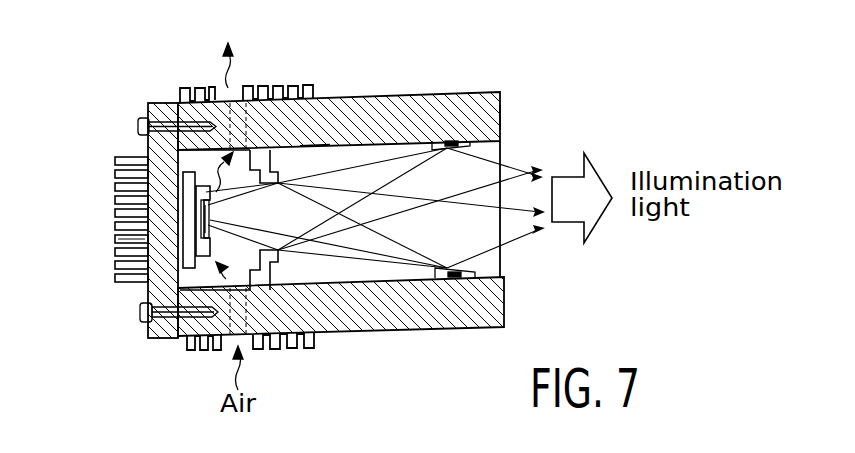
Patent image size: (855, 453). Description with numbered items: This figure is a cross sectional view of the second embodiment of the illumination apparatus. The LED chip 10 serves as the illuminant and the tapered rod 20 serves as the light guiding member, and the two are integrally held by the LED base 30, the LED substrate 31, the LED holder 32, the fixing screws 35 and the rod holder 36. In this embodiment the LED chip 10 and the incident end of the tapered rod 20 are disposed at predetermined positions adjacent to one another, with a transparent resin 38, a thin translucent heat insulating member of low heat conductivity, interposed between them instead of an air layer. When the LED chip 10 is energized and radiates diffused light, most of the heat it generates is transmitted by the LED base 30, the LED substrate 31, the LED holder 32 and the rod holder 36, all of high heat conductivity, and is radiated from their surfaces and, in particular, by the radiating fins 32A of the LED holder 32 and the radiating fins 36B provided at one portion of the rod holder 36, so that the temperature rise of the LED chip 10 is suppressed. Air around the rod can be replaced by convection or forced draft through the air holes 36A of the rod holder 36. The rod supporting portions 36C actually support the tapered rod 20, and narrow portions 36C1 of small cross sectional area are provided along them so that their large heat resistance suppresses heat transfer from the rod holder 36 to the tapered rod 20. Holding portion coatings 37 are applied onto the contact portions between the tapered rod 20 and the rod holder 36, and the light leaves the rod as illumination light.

The LED chip 10 is at (161, 219).
The tapered rod 20 is at (500, 262).
The LED base 30 is at (147, 149).
The LED substrate 31 is at (150, 184).
The LED holder 32 is at (185, 212).
The radiating fins 32A is at (128, 242).
The fixing screws 35 is at (140, 316).
The rod holder 36 is at (203, 101).
The air holes 36A is at (268, 342).
The radiating fins 36B is at (193, 351).
The rod supporting portions 36C is at (428, 142).
The narrow portions 36C1 is at (313, 140).
The holding portion coatings 37 is at (283, 253).
The transparent resin 38 is at (247, 162).